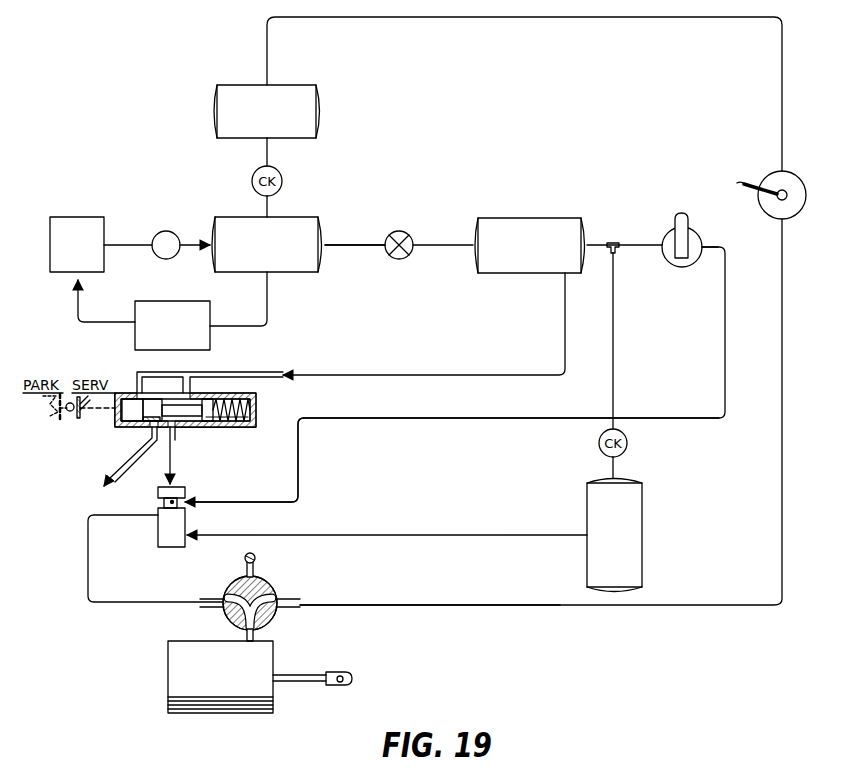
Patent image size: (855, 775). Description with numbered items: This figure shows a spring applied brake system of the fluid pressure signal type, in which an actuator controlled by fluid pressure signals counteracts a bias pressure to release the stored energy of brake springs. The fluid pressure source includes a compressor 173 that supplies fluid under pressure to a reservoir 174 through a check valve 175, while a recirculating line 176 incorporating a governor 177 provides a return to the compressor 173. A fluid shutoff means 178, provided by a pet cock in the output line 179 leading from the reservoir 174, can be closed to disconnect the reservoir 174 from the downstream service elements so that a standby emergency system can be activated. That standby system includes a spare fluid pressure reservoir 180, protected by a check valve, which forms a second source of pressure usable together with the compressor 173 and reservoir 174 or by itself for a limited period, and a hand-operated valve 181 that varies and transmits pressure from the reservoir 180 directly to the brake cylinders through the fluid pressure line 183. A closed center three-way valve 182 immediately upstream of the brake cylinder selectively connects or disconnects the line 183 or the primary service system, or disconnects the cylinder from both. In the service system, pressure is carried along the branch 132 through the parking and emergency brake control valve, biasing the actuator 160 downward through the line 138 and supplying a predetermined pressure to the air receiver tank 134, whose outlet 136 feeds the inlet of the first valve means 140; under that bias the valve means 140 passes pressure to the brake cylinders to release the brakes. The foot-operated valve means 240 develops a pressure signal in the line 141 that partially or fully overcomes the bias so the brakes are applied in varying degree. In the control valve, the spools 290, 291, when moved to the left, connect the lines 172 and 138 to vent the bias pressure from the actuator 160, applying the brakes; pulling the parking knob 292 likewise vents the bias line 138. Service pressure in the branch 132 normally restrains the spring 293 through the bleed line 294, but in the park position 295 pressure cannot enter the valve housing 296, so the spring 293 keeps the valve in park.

The branch 132 is at (398, 375).
The air receiver tank 134 is at (644, 510).
The outlet 136 is at (556, 535).
The line 138 is at (178, 447).
The first valve means 140 is at (190, 525).
The line 141 is at (298, 478).
The actuator 160 is at (190, 492).
The line 172 is at (146, 454).
The compressor 173 is at (85, 219).
The reservoir 174 is at (295, 222).
The check valve 175 is at (167, 231).
The recirculating line 176 is at (236, 329).
The governor 177 is at (180, 301).
The fluid shutoff means 178 is at (404, 232).
The output line 179 is at (340, 248).
The spare fluid pressure reservoir 180 is at (299, 92).
The hand-operated valve 181 is at (765, 174).
The closed center three-way valve 182 is at (280, 586).
The fluid pressure line 183 is at (455, 607).
The foot-operated valve means 240 is at (666, 258).
The spool 290 is at (146, 428).
The spool 291 is at (208, 425).
The parking knob 292 is at (75, 421).
The spring 293 is at (257, 416).
The bleed line 294 is at (136, 383).
The park position 295 is at (55, 421).
The valve housing 296 is at (72, 413).